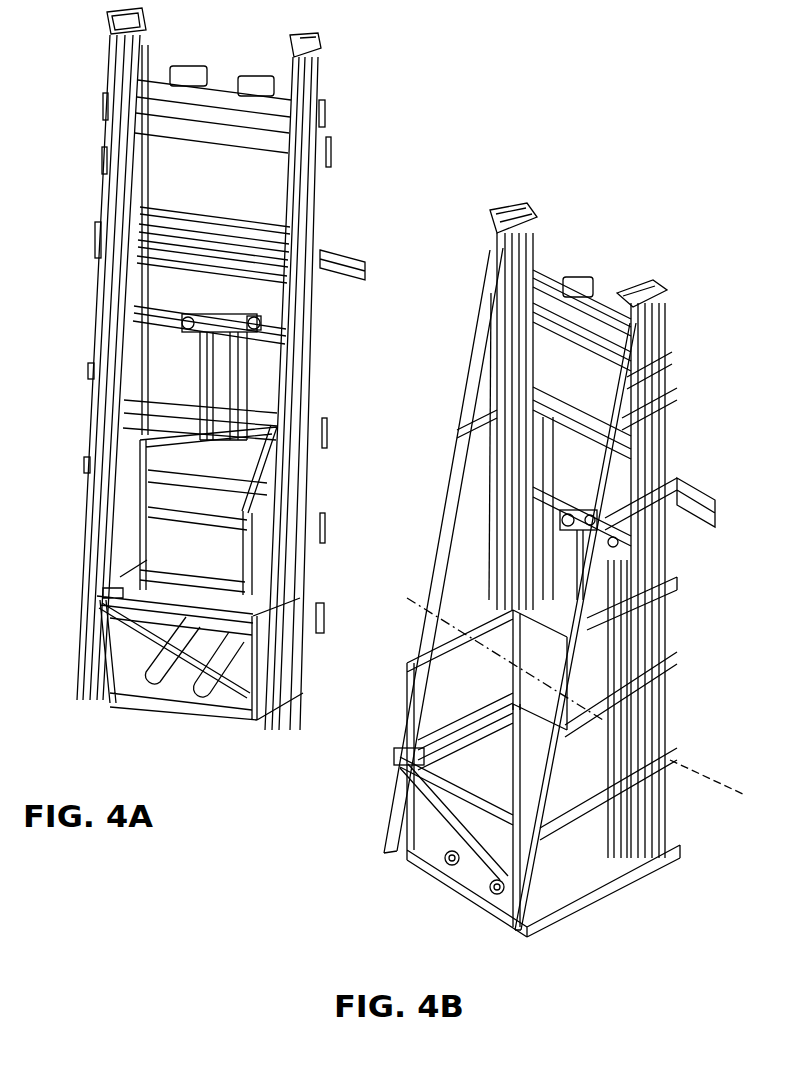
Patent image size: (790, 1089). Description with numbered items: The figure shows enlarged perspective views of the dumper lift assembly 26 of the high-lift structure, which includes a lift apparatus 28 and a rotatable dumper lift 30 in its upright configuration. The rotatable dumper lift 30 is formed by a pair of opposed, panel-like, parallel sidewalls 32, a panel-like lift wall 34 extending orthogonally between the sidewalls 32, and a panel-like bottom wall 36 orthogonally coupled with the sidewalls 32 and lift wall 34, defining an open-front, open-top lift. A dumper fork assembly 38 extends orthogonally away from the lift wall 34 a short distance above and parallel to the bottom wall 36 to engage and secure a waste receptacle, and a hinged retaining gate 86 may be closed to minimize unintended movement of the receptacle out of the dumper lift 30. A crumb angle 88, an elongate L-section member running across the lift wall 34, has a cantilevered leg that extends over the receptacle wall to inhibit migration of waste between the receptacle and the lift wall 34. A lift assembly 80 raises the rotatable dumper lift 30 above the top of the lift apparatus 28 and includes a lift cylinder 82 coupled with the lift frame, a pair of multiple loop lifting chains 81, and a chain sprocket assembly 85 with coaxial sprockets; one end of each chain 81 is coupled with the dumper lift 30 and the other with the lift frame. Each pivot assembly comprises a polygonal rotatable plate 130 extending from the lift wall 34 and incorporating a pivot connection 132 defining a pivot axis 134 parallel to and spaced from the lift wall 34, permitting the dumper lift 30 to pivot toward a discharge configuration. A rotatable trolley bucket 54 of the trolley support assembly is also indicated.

In FIG. 4A, the dumper lift assembly 26 is at (325, 360).
In FIG. 4B, the dumper lift assembly 26 is at (667, 457).
In FIG. 4A, the lift apparatus 28 is at (173, 720).
In FIG. 4B, the lift apparatus 28 is at (567, 867).
In FIG. 4A, the rotatable dumper lift 30 is at (260, 530).
In FIG. 4B, the rotatable dumper lift 30 is at (593, 737).
In FIG. 4A, the sidewalls 32 is at (127, 507).
In FIG. 4B, the sidewalls 32 is at (437, 690).
In FIG. 4A, the lift wall 34 is at (190, 463).
In FIG. 4B, the lift wall 34 is at (540, 650).
In FIG. 4A, the bottom wall 36 is at (153, 697).
In FIG. 4B, the bottom wall 36 is at (437, 867).
In FIG. 4A, the dumper fork assembly 38 is at (143, 663).
In FIG. 4B, the rotatable trolley bucket 54 is at (427, 820).
In FIG. 4A, the lift assembly 80 is at (193, 357).
In FIG. 4B, the lift assembly 80 is at (623, 577).
In FIG. 4A, the multiple loop lifting chains 81 is at (210, 395).
In FIG. 4A, the lift cylinder 82 is at (220, 393).
In FIG. 4A, the chain sprocket assembly 85 is at (255, 320).
In FIG. 4A, the hinged retaining gate 86 is at (190, 667).
In FIG. 4B, the hinged retaining gate 86 is at (470, 867).
In FIG. 4A, the crumb angle 88 is at (193, 557).
In FIG. 4B, the rotatable plate 130 is at (617, 713).
In FIG. 4B, the pivot connection 132 is at (665, 762).
In FIG. 4B, the pivot axis 134 is at (710, 780).